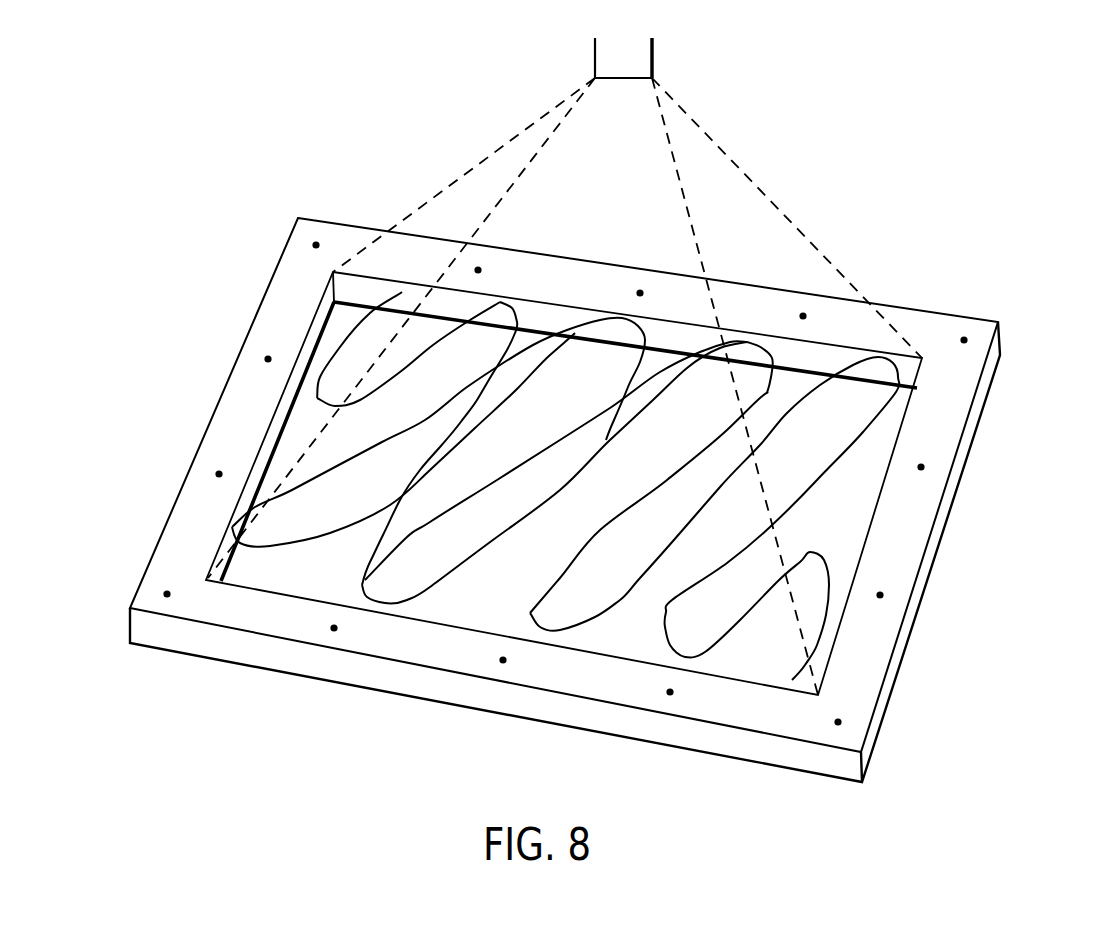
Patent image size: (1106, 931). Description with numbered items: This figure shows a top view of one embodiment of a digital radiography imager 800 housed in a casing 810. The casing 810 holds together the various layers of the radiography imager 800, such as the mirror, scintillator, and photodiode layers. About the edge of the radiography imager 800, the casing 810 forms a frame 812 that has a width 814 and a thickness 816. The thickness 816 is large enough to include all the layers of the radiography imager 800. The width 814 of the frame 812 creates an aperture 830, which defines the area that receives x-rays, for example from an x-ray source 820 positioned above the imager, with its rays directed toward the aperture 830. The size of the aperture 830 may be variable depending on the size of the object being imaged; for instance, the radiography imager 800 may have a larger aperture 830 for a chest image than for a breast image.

The radiography imager 800 is at (208, 124).
The casing 810 is at (514, 500).
The frame 812 is at (232, 432).
The width 814 is at (316, 312).
The thickness 816 is at (108, 626).
The x-ray source 820 is at (628, 58).
The aperture 830 is at (511, 582).